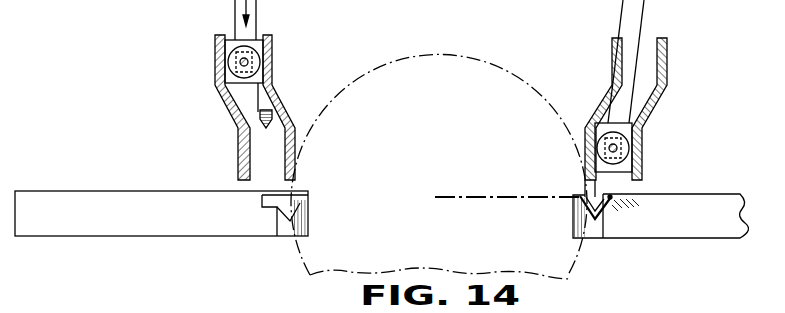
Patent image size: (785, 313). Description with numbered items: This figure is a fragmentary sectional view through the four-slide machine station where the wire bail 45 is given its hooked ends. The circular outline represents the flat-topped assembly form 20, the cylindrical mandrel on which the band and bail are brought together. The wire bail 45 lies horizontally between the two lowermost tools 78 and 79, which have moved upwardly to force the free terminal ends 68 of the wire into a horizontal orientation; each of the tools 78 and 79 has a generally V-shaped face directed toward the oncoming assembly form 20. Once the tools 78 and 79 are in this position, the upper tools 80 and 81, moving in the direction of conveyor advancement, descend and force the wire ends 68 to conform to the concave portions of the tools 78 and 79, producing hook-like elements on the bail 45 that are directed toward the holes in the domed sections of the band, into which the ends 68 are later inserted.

The assembly form 20 is at (484, 67).
The wire bail 45 is at (478, 196).
The terminal ends of the wire 68 is at (585, 206).
The lowermost tool 78 is at (658, 227).
The lowermost tool 79 is at (220, 230).
The tool 80 is at (596, 197).
The tool 81 is at (258, 116).